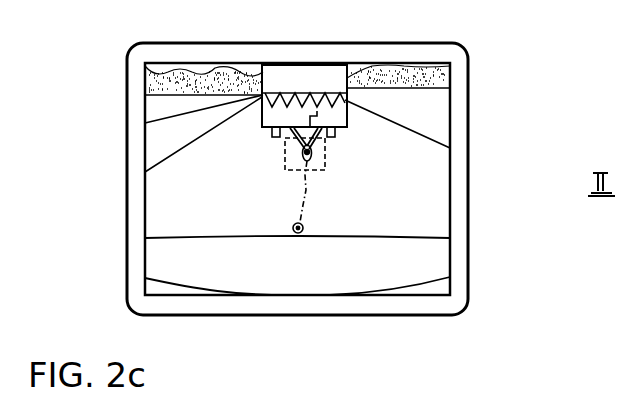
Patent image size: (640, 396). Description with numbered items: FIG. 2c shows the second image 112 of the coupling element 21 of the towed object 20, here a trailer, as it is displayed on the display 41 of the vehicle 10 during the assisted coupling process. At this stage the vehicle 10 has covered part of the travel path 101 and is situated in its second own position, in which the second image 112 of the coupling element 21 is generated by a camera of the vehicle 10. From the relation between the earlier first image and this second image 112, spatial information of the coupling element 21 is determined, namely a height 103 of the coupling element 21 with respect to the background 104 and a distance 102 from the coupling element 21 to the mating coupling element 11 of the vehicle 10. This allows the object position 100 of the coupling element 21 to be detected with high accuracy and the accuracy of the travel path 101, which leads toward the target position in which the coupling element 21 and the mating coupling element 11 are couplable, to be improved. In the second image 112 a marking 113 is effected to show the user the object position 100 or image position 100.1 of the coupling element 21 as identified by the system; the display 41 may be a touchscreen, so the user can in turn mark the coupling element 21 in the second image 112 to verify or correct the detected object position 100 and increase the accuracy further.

The vehicle 10 is at (171, 234).
The mating coupling element 11 is at (300, 233).
The towed object 20 is at (290, 73).
The coupling element 21 is at (326, 153).
The display 41 is at (479, 72).
The object position 100 is at (334, 147).
The image position 100.1 is at (277, 157).
The travel path 101 is at (297, 196).
The distance 102 is at (302, 210).
The height 103 is at (307, 181).
The background 104 is at (318, 192).
The second image 112 is at (408, 58).
The marking 113 is at (323, 142).